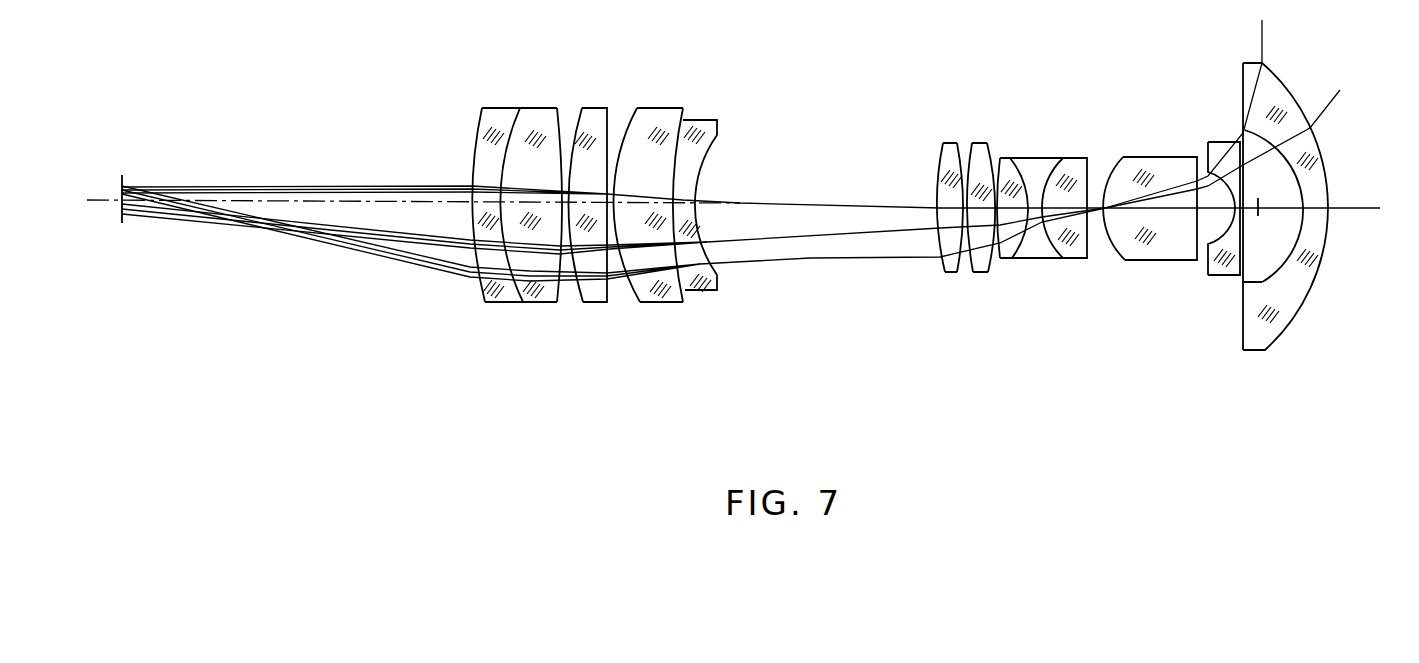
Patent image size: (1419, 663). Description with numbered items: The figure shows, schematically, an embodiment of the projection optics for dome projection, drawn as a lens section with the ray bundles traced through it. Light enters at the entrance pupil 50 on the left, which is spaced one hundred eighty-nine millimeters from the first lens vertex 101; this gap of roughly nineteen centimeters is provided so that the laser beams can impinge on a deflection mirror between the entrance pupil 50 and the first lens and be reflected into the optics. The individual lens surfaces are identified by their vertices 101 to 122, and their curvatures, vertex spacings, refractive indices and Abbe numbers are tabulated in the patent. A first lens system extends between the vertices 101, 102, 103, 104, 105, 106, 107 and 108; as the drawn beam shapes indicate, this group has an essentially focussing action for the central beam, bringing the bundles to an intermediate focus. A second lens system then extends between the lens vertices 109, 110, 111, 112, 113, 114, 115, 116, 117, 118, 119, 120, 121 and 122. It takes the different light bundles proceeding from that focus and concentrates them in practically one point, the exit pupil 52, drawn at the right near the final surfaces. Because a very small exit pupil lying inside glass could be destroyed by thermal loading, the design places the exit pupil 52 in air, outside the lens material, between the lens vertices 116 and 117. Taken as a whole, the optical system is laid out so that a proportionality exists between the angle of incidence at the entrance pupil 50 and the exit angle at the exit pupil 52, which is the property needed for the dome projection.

The entrance pupil 50 is at (122, 220).
The exit pupil 52 is at (1258, 207).
The first lens vertex 101 is at (473, 288).
The lens surface 102 is at (513, 288).
The lens surface 103 is at (550, 302).
The lens surface 104 is at (576, 118).
The lens surface 105 is at (597, 302).
The lens surface 106 is at (628, 120).
The lens surface 107 is at (678, 302).
The lens surface 108 is at (707, 160).
The lens surface 109 is at (940, 167).
The lens surface 110 is at (953, 272).
The lens surface 111 is at (963, 158).
The lens surface 112 is at (968, 272).
The lens surface 113 is at (993, 158).
The lens surface 114 is at (1027, 258).
The lens surface 115 is at (1050, 158).
The lens vertex 116 is at (1090, 258).
The lens vertex 117 is at (1123, 157).
The lens surface 118 is at (1168, 260).
The lens surface 119 is at (1213, 263).
The lens surface 120 is at (1240, 160).
The lens surface 121 is at (1245, 282).
The lens surface 122 is at (1300, 313).